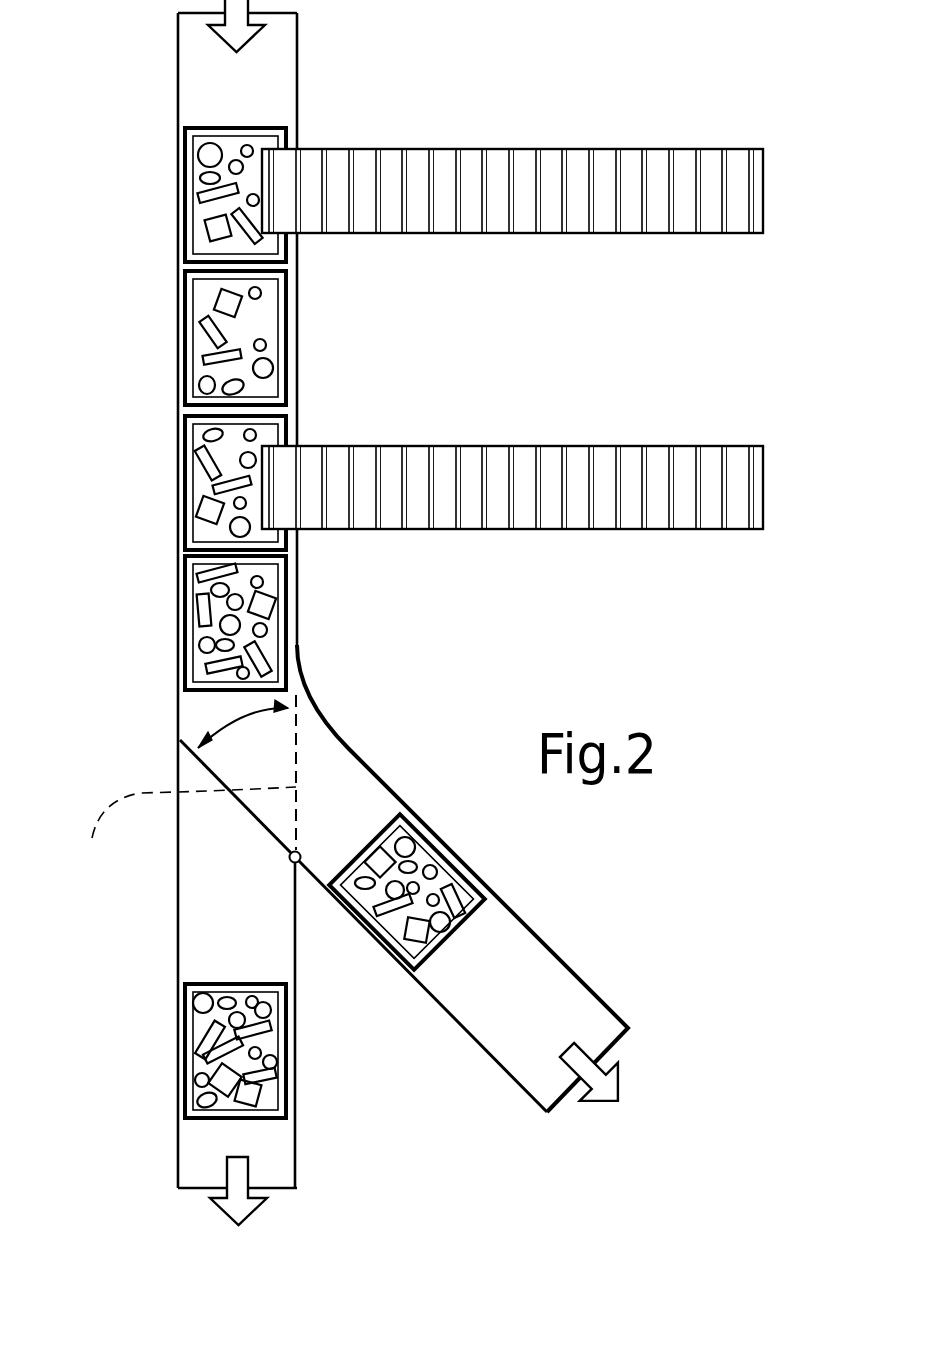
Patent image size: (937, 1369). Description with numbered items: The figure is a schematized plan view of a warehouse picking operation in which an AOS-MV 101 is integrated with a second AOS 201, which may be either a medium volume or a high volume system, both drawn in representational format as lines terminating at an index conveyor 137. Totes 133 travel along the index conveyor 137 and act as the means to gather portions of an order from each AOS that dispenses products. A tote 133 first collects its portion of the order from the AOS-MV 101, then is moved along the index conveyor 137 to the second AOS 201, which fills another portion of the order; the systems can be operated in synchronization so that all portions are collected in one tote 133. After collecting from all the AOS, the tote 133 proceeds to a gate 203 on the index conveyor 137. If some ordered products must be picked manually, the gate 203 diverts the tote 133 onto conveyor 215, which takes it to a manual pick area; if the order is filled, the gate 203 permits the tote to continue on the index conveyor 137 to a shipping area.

The index conveyor 137 is at (167, 97).
The tote 133 is at (200, 346).
The AOS-MV 101 is at (502, 148).
The AOS 201 is at (443, 430).
The gate 203 is at (263, 826).
The conveyor 215 is at (557, 975).